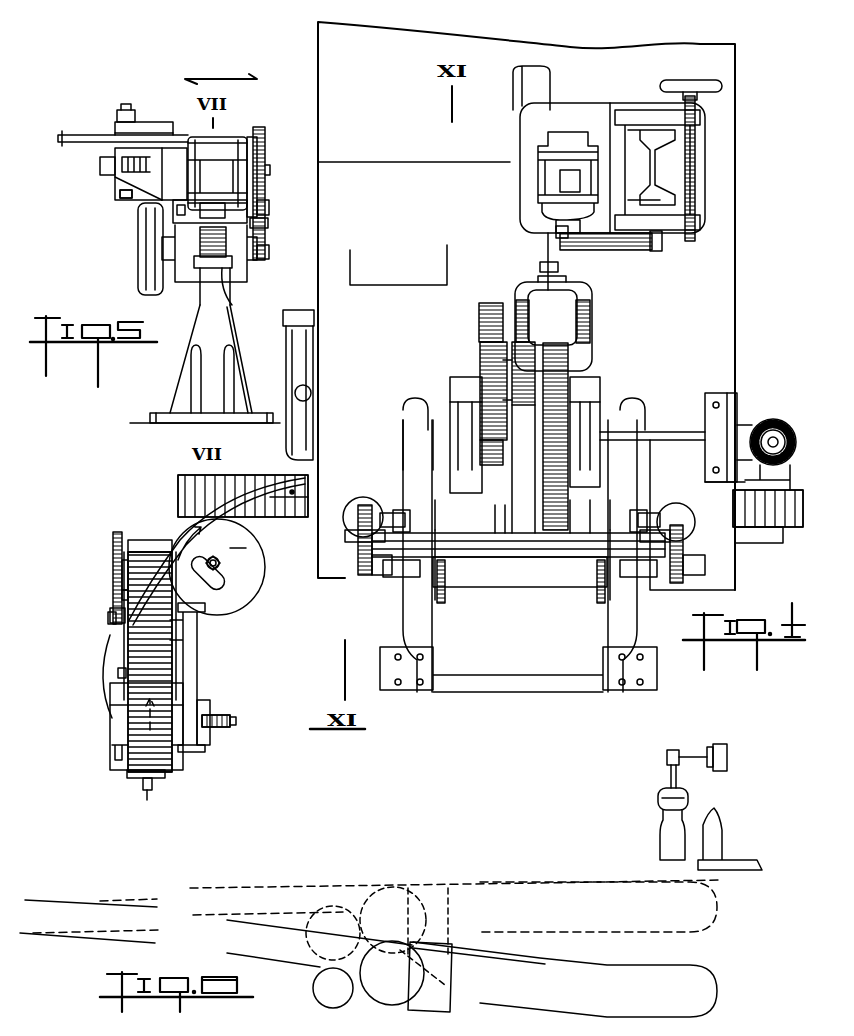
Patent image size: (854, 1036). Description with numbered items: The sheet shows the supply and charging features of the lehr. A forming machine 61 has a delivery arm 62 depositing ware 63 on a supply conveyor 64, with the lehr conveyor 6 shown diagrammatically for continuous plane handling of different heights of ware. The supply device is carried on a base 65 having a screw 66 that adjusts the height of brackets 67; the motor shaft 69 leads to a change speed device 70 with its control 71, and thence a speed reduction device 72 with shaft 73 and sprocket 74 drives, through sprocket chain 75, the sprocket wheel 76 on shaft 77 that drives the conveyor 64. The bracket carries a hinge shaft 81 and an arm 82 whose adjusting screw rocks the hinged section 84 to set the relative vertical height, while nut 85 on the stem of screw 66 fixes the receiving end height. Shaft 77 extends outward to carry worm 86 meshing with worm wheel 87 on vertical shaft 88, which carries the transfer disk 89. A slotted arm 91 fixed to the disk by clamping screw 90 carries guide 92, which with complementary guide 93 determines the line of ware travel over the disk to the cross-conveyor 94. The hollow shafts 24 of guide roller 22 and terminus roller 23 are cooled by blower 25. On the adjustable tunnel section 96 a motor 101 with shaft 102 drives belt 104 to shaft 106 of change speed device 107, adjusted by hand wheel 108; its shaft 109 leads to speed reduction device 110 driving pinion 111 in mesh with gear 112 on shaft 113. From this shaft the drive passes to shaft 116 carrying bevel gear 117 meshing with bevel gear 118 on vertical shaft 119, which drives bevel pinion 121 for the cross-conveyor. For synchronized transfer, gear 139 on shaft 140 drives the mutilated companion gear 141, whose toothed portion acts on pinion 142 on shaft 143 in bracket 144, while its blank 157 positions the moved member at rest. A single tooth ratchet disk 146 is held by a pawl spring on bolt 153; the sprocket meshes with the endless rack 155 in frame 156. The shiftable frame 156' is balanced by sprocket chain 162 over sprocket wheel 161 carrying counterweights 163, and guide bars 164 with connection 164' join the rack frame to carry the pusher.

In FIG. 4, the adjustable tunnel section 96 is at (590, 56).
In FIG. 4, the hand wheel 108 is at (722, 88).
In FIG. 4, the motor 101 is at (536, 205).
In FIG. 4, the shaft 109 is at (546, 254).
In FIG. 4, the shaft 102 is at (565, 238).
In FIG. 4, the belt 104 is at (612, 250).
In FIG. 4, the shaft 106 is at (658, 252).
In FIG. 4, the change speed device 107 is at (696, 230).
In FIG. 4, the speed reduction device 110 is at (560, 312).
In FIG. 4, the pinion 111 is at (480, 322).
In FIG. 4, the mutilated companion gear 141 is at (535, 345).
In FIG. 4, the gear 112 is at (480, 357).
In FIG. 4, the shaft 113 is at (545, 393).
In FIG. 4, the gear 139 is at (567, 405).
In FIG. 4, the shaft 140 is at (482, 437).
In FIG. 4, the shaft 116 is at (690, 430).
In FIG. 4, the bevel gear 117 is at (733, 425).
In FIG. 4, the bevel gear 118 is at (783, 422).
In FIG. 4, the vertical shaft 119 is at (740, 480).
In FIG. 4, the bevel pinion 121 is at (800, 472).
In FIG. 4, the bolt 153 is at (406, 473).
In FIG. 4, the single tooth ratchet disk 146 is at (505, 512).
In FIG. 4, the blank 157 is at (545, 494).
In FIG. 4, the counterweights 163 is at (358, 540).
In FIG. 4, the sprocket wheel 161 is at (357, 560).
In FIG. 4, the sprocket chain 162 is at (375, 572).
In FIG. 4, the shiftable frame 156' is at (551, 557).
In FIG. 4, the pinion 142 is at (525, 545).
In FIG. 4, the shaft 143 is at (500, 528).
In FIG. 4, the bracket 144 is at (583, 528).
In FIG. 4, the guide bars 164 is at (520, 579).
In FIG. 4, the endless cycle-providing rack 155 is at (443, 603).
In FIG. 4, the frame 156 is at (517, 574).
In FIG. 4, the connection 164' is at (520, 556).
In FIG. 5, the blower 25 is at (316, 323).
In FIG. 5, the shafts 24 is at (305, 448).
In FIG. 5, the transfer disk 89 is at (66, 144).
In FIG. 6, the transfer disk 89 is at (254, 596).
In FIG. 5, the guide 92 is at (165, 122).
In FIG. 6, the guide 92 is at (246, 548).
In FIG. 5, the clamping screw 90 is at (118, 112).
In FIG. 6, the clamping screw 90 is at (219, 562).
In FIG. 5, the vertical shaft 88 is at (128, 110).
In FIG. 6, the vertical shaft 88 is at (213, 572).
In FIG. 5, the worm wheel 87 is at (145, 160).
In FIG. 5, the worm 86 is at (115, 175).
In FIG. 5, the shaft 77 is at (150, 176).
In FIG. 5, the conveyor 64 is at (240, 142).
In FIG. 6, the conveyor 64 is at (135, 718).
In FIG. 5, the sprocket wheel 76 is at (266, 150).
In FIG. 6, the sprocket wheel 76 is at (113, 556).
In FIG. 5, the sprocket chain 75 is at (268, 205).
In FIG. 6, the sprocket chain 75 is at (112, 575).
In FIG. 5, the brackets 67 is at (268, 226).
In FIG. 5, the sprocket 74 is at (268, 254).
In FIG. 6, the sprocket 74 is at (115, 628).
In FIG. 5, the section 84 is at (180, 212).
In FIG. 5, the screw 66 is at (202, 243).
In FIG. 5, the speed reduction device 72 is at (232, 284).
In FIG. 6, the speed reduction device 72 is at (120, 595).
In FIG. 5, the nut 85 is at (236, 300).
In FIG. 5, the base 65 is at (200, 309).
In FIG. 6, the base 65 is at (100, 660).
In FIG. 6, the cross-conveyor 94 is at (256, 480).
In FIG. 6, the complementary guide 93 is at (178, 530).
In FIG. 6, the slotted arm 91 is at (232, 577).
In FIG. 6, the shaft 73 is at (110, 620).
In FIG. 6, the control 71 is at (143, 795).
In FIG. 6, the arm 82 is at (180, 634).
In FIG. 6, the hinge shaft 81 is at (120, 672).
In FIG. 6, the change speed device 70 is at (210, 712).
In FIG. 6, the shaft 69 is at (234, 722).
In FIG. 6, the sheet 6 is at (305, 890).
In FIG. 6, the guide roller 22 is at (316, 972).
In FIG. 6, the primary conveyor lehr terminus roller 23 is at (368, 1000).
In FIG. 6, the delivery arm 62 is at (680, 780).
In FIG. 6, the ware 63 is at (660, 836).
In FIG. 6, the forming machine 61 is at (714, 836).